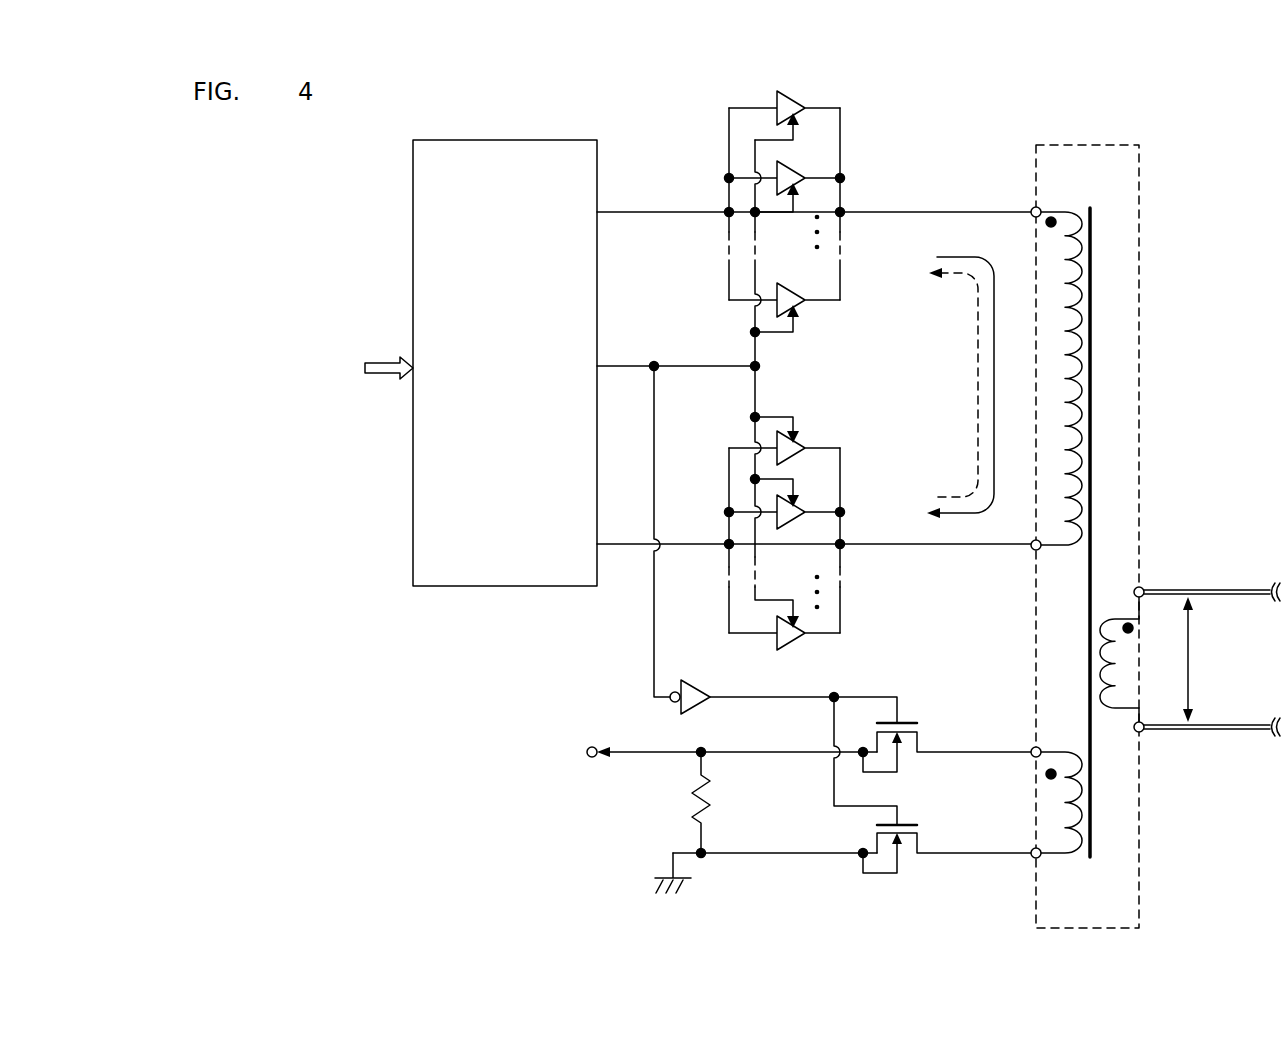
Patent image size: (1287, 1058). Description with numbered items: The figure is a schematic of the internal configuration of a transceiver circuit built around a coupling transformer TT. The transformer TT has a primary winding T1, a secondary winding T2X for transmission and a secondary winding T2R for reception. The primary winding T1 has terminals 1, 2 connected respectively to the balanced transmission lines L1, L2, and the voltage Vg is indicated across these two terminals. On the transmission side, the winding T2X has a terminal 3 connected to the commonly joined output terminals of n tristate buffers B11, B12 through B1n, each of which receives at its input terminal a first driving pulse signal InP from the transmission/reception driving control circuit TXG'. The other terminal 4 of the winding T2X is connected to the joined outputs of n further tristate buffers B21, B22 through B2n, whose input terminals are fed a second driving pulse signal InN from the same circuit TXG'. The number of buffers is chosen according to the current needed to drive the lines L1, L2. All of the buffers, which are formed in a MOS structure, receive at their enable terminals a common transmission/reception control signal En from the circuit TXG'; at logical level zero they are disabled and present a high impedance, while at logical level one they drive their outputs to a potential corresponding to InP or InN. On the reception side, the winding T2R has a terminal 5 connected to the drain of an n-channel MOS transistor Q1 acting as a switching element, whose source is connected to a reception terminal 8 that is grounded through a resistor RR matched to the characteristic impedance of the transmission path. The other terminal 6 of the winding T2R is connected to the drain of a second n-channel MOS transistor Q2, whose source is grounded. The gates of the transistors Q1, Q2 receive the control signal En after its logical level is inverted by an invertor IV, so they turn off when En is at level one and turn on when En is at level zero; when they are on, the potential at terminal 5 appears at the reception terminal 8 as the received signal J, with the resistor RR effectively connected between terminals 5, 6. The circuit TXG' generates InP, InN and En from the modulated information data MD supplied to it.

The terminal 1 is at (1147, 579).
The terminal 2 is at (1147, 743).
The terminal 3 is at (1028, 200).
The terminal 4 is at (1028, 532).
The terminal 5 is at (1028, 741).
The terminal 6 is at (1028, 841).
The reception terminal 8 is at (592, 746).
The transmission/reception driving control circuit TXG' is at (505, 330).
The modulated information data MD is at (311, 369).
The first driving pulse signal InP is at (814, 199).
The transmission/reception control signal En is at (678, 516).
The second driving pulse signal InN is at (814, 531).
The tristate buffer B11 is at (801, 105).
The tristate buffer B12 is at (800, 175).
The tristate buffer B1n is at (800, 297).
The tristate buffer B21 is at (802, 444).
The tristate buffer B22 is at (800, 516).
The tristate buffer B2n is at (800, 637).
The invertor IV is at (698, 684).
The n-channel MOS transistor Q1 is at (917, 741).
The n-channel MOS transistor Q2 is at (917, 841).
The resistor RR is at (692, 803).
The received signal J is at (672, 750).
The coupling transformer TT is at (1104, 143).
The secondary winding for transmission T2X is at (1067, 202).
The secondary winding for reception T2R is at (1077, 859).
The primary winding T1 is at (1122, 609).
The balanced transmission line L1 is at (1222, 588).
The balanced transmission line L2 is at (1225, 735).
The voltage across terminals 1 and 2 Vg is at (1203, 659).